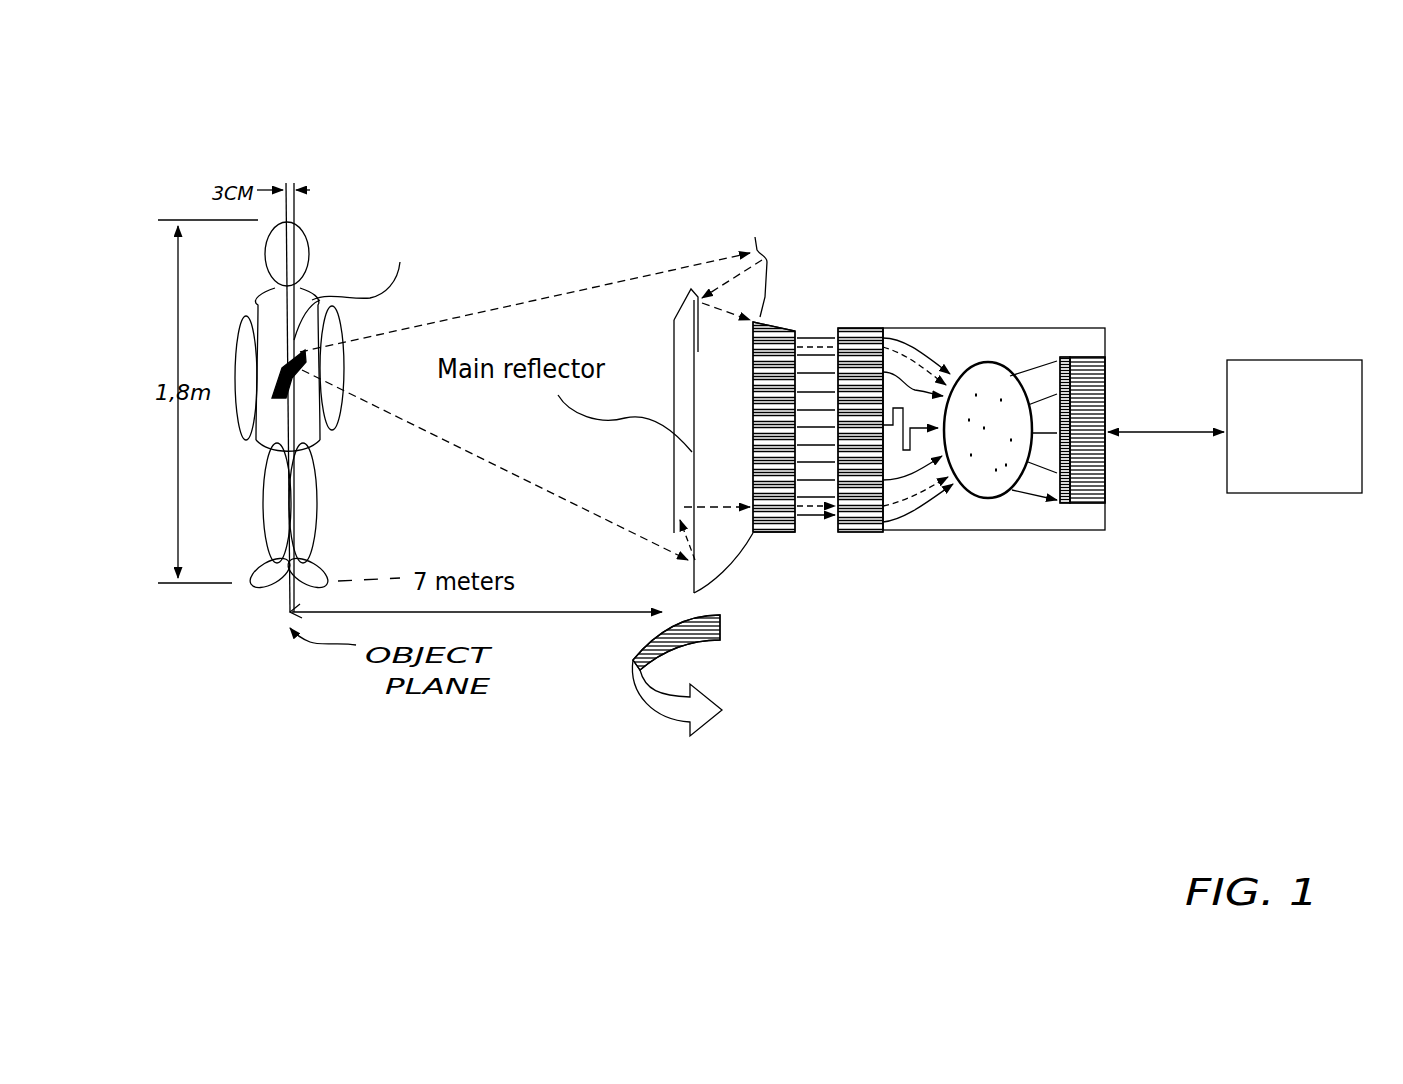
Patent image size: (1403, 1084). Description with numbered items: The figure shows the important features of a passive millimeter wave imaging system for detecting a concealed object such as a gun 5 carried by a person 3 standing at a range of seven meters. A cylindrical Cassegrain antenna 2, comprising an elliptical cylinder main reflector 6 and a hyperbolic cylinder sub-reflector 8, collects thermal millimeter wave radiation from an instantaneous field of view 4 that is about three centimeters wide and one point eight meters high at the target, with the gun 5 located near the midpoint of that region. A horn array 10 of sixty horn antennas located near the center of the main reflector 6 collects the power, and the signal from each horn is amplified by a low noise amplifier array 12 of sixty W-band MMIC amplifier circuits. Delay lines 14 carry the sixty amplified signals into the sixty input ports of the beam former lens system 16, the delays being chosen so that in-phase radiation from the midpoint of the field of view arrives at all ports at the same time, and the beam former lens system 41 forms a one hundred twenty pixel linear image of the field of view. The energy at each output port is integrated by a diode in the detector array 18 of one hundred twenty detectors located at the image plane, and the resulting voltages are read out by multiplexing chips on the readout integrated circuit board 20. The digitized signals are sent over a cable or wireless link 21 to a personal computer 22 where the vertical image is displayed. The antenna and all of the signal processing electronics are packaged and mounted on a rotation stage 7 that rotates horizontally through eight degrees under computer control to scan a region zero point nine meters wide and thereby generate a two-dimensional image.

The cylindrical Cassegrain antenna 2 is at (750, 218).
The person / subject 3 is at (257, 292).
The instantaneous field of view 4 is at (292, 166).
The gun 5 is at (300, 396).
The main reflector 6 is at (720, 582).
The rotation stage 7 is at (745, 702).
The sub-reflector 8 is at (648, 352).
The horn array 10 is at (780, 550).
The low noise amplifier array 12 is at (858, 328).
The delay lines 14 is at (930, 532).
The beam former lens system 16 is at (1000, 362).
The detector array 18 is at (1065, 532).
The readout integrated circuit board 20 is at (1105, 358).
The link 21 is at (1153, 452).
The personal computer 22 is at (1294, 427).
The beam former lens system 41 is at (957, 727).